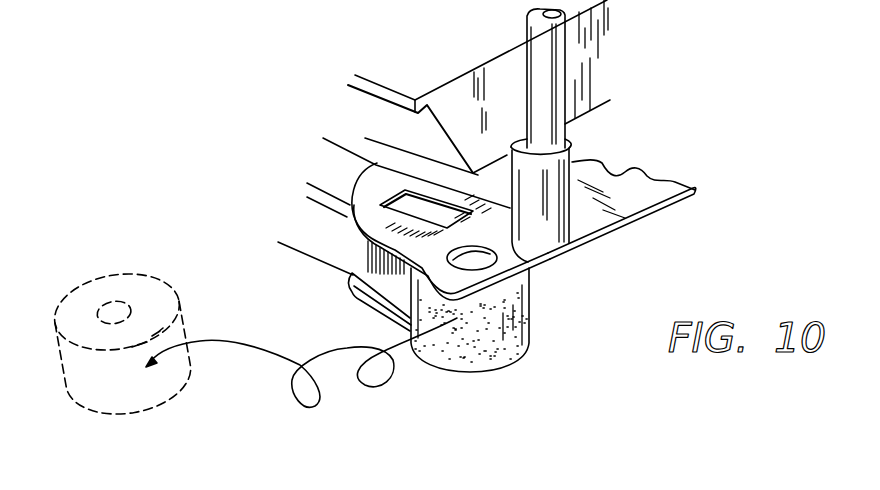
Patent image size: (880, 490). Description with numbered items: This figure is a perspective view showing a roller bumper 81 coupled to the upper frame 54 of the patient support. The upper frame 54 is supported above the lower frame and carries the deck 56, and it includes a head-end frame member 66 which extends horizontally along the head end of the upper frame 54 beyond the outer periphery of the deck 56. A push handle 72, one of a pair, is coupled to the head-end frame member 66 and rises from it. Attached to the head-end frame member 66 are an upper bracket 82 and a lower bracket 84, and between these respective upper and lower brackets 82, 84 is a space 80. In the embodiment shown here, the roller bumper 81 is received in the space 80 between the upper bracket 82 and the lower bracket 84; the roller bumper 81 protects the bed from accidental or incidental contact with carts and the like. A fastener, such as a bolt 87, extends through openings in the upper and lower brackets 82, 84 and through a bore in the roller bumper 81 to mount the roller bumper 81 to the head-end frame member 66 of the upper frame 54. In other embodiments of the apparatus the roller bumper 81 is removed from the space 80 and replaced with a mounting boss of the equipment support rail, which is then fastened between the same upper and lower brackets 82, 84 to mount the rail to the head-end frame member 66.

The deck 56 is at (392, 120).
The push handle 72 is at (548, 71).
The upper bracket 82 is at (375, 181).
The bolt 87 is at (481, 266).
The head-end frame member 66 is at (633, 197).
The upper frame 54 is at (316, 236).
The space 80 is at (345, 274).
The lower bracket 84 is at (376, 309).
The roller bumper 81 is at (518, 334).